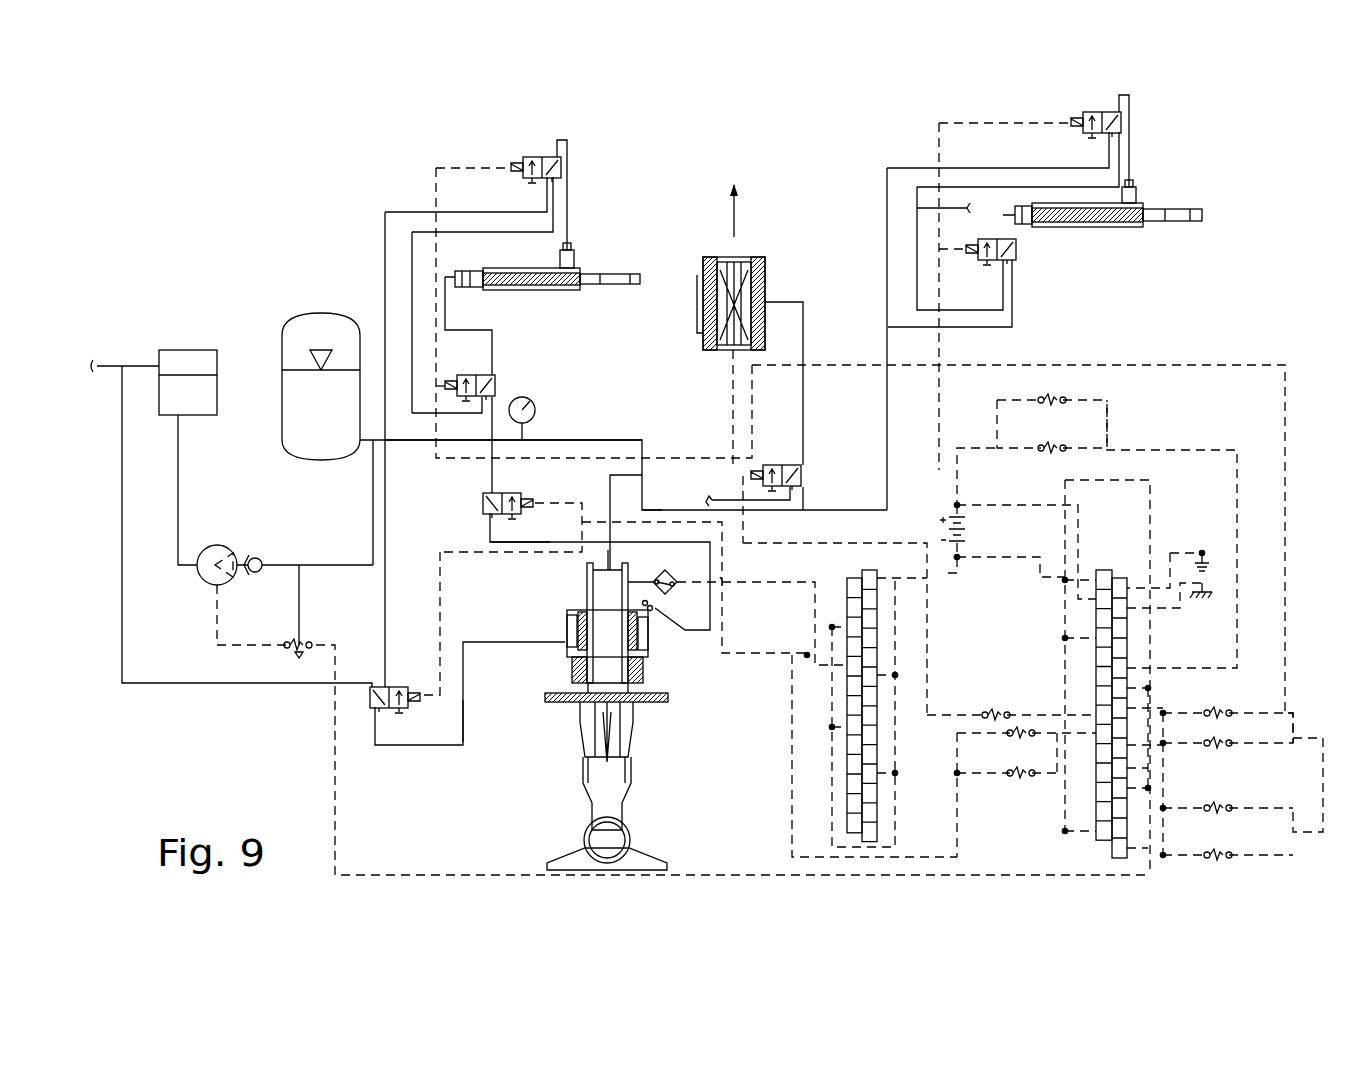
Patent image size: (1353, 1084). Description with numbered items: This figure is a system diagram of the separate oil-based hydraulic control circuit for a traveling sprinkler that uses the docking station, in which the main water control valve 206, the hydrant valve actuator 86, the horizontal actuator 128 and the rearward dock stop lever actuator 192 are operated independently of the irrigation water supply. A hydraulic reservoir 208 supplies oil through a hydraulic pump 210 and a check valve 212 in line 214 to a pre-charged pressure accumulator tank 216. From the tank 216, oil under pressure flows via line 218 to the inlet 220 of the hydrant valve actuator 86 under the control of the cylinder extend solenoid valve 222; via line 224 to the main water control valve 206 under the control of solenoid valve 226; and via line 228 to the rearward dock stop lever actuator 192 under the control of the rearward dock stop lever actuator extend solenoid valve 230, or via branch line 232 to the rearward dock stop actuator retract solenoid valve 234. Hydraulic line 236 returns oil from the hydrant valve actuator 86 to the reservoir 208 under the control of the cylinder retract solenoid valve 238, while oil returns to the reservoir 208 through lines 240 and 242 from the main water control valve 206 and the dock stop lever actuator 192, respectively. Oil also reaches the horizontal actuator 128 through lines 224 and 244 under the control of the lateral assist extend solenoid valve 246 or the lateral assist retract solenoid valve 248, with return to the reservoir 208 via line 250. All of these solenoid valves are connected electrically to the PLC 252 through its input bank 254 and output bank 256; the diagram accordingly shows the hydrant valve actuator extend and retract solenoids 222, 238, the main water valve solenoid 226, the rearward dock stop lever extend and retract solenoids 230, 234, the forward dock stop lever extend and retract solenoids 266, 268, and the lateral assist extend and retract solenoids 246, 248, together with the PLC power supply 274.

The hydrant valve actuator 86 is at (565, 600).
The horizontal actuator 128 is at (1178, 198).
The rearward dock stop lever actuator 192 is at (588, 253).
The main water control valve 206 is at (786, 268).
The hydraulic reservoir 208 is at (197, 350).
The hydraulic pump 210 is at (207, 556).
The check valve 212 is at (258, 560).
The line 214 is at (178, 494).
The pre-charged pressure accumulator tank 216 is at (302, 330).
The line 218 is at (490, 540).
The inlet 220 is at (650, 604).
The cylinder extend solenoid valve 222 is at (483, 497).
The line 224 is at (590, 440).
The solenoid valve 226 is at (806, 463).
The line 228 is at (493, 355).
The rearward dock stop lever actuator extend solenoid valve 230 is at (497, 385).
The branch line 232 is at (385, 272).
The rearward dock stop actuator retract solenoid valve 234 is at (528, 157).
The hydraulic line 236 is at (463, 687).
The cylinder retract solenoid valve 238 is at (398, 707).
The line 240 is at (704, 491).
The line 242 is at (457, 232).
The line 244 is at (822, 440).
The lateral assist extend solenoid valve 246 is at (1017, 250).
The lateral assist retract solenoid valve 248 is at (1083, 113).
The line 250 is at (950, 208).
The PLC 252 is at (928, 470).
The input bank 254 is at (813, 543).
The output bank 256 is at (1190, 462).
The forward dock stop lever extend solenoid 266 is at (1210, 800).
The forward dock stop lever retract solenoid 268 is at (1213, 866).
The PLC power supply 274 is at (975, 530).